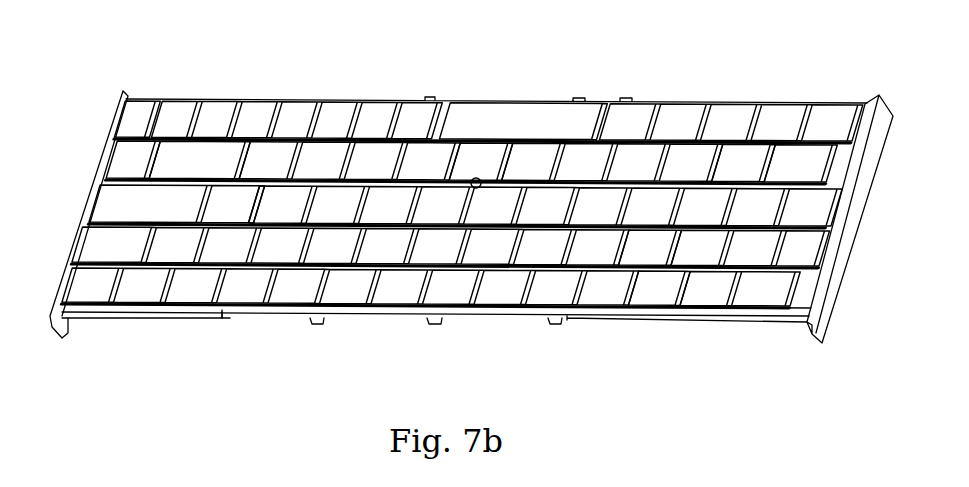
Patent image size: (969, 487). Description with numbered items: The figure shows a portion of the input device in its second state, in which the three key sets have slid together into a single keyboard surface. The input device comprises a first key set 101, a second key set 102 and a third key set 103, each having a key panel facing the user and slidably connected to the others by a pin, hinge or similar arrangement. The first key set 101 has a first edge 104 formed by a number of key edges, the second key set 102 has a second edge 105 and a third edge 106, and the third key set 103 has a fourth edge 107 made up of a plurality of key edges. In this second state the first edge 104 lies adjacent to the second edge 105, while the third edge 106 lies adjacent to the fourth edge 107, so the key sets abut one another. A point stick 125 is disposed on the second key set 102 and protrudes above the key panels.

The first key set 101 is at (197, 165).
The second key set 102 is at (476, 177).
The third key set 103 is at (750, 158).
The first edge 104 is at (222, 302).
The second edge 105 is at (260, 190).
The third edge 106 is at (623, 262).
The fourth edge 107 is at (648, 268).
The point stick 125 is at (480, 165).